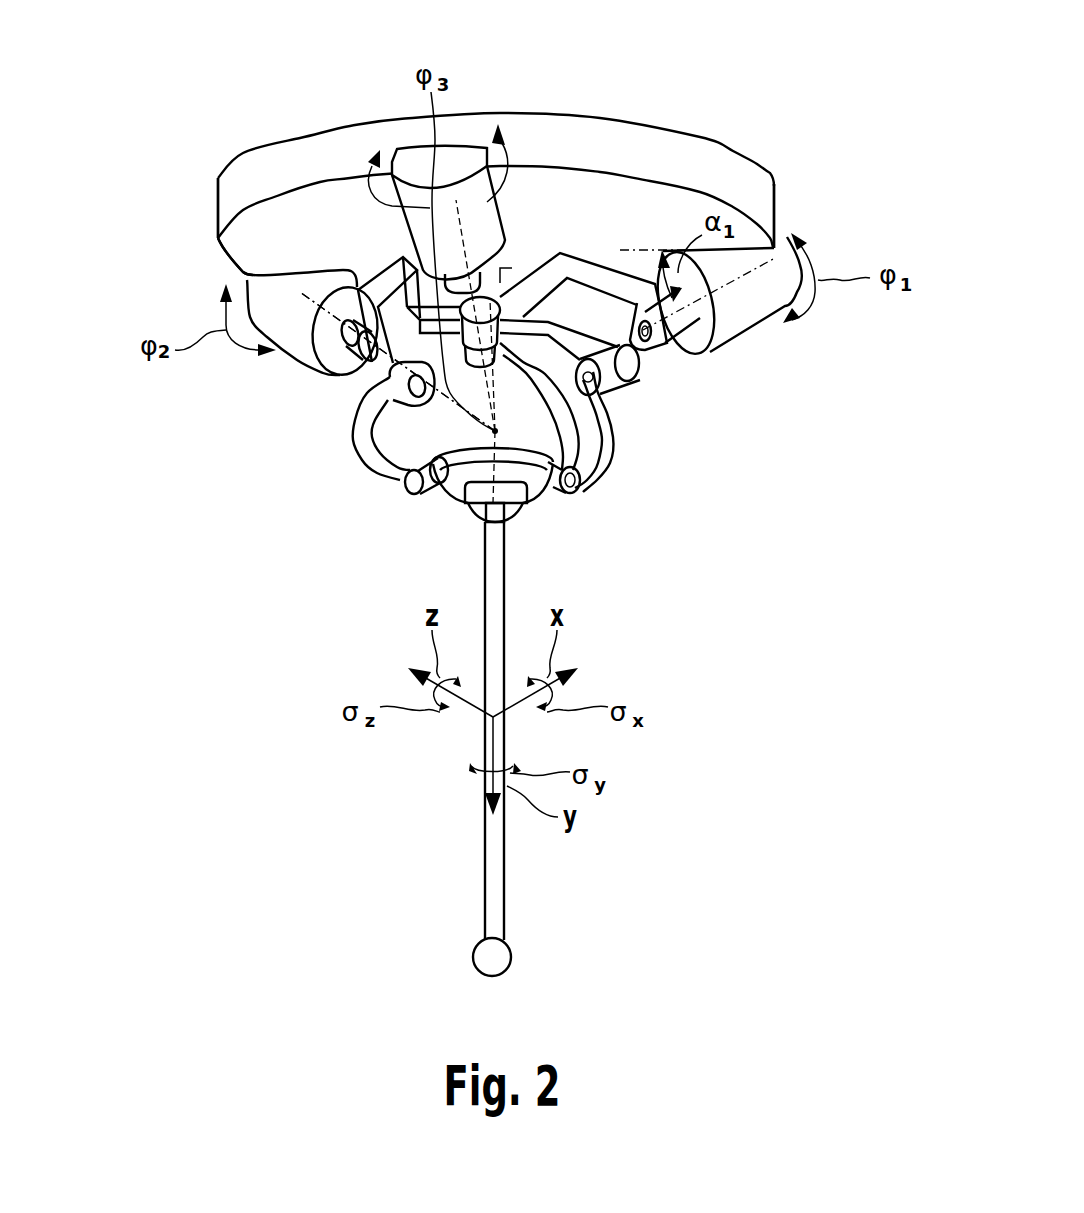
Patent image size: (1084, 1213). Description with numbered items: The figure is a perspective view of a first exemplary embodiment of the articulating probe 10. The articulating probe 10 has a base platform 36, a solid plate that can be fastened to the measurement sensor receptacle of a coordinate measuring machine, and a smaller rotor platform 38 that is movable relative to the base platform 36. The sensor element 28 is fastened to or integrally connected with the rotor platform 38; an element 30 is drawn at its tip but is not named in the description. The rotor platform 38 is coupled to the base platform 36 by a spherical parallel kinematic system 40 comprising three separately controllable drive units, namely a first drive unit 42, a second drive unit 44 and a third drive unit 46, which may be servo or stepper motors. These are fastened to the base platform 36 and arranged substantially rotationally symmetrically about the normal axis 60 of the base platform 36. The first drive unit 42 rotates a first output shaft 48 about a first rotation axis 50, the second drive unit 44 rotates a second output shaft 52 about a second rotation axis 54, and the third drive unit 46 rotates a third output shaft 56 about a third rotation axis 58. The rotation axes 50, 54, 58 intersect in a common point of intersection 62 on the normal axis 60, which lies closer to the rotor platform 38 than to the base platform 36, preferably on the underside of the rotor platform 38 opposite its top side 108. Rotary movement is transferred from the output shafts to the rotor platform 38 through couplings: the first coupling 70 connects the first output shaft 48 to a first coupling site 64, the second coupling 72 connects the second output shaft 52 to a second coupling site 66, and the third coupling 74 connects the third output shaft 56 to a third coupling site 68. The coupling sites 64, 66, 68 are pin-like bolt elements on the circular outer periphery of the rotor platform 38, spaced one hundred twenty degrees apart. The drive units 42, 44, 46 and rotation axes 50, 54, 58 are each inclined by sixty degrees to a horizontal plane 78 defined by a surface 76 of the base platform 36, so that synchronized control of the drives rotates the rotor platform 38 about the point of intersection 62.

The articulating probe 10 is at (757, 97).
The sensor element 28 is at (495, 862).
The probe ball 30 is at (495, 962).
The base platform 36 is at (637, 142).
The rotor platform 38 is at (537, 490).
The spherical parallel kinematic system 40 is at (249, 424).
The first drive unit 42 is at (744, 315).
The second drive unit 44 is at (300, 330).
The third drive unit 46 is at (487, 200).
The first output shaft 48 is at (695, 328).
The first rotation axis 50 is at (633, 343).
The second output shaft 52 is at (342, 338).
The second rotation axis 54 is at (375, 458).
The third output shaft 56 is at (468, 258).
The third rotation axis 58 is at (503, 312).
The normal axis 60 is at (403, 237).
The point of intersection 62 is at (490, 433).
The first coupling site 64 is at (580, 490).
The second coupling site 66 is at (513, 510).
The third coupling site 68 is at (403, 483).
The first coupling 70 is at (592, 268).
The second coupling 72 is at (612, 430).
The third coupling 74 is at (380, 281).
The surface 76 is at (270, 237).
The horizontal plane 78 is at (190, 253).
The top side 108 is at (480, 512).